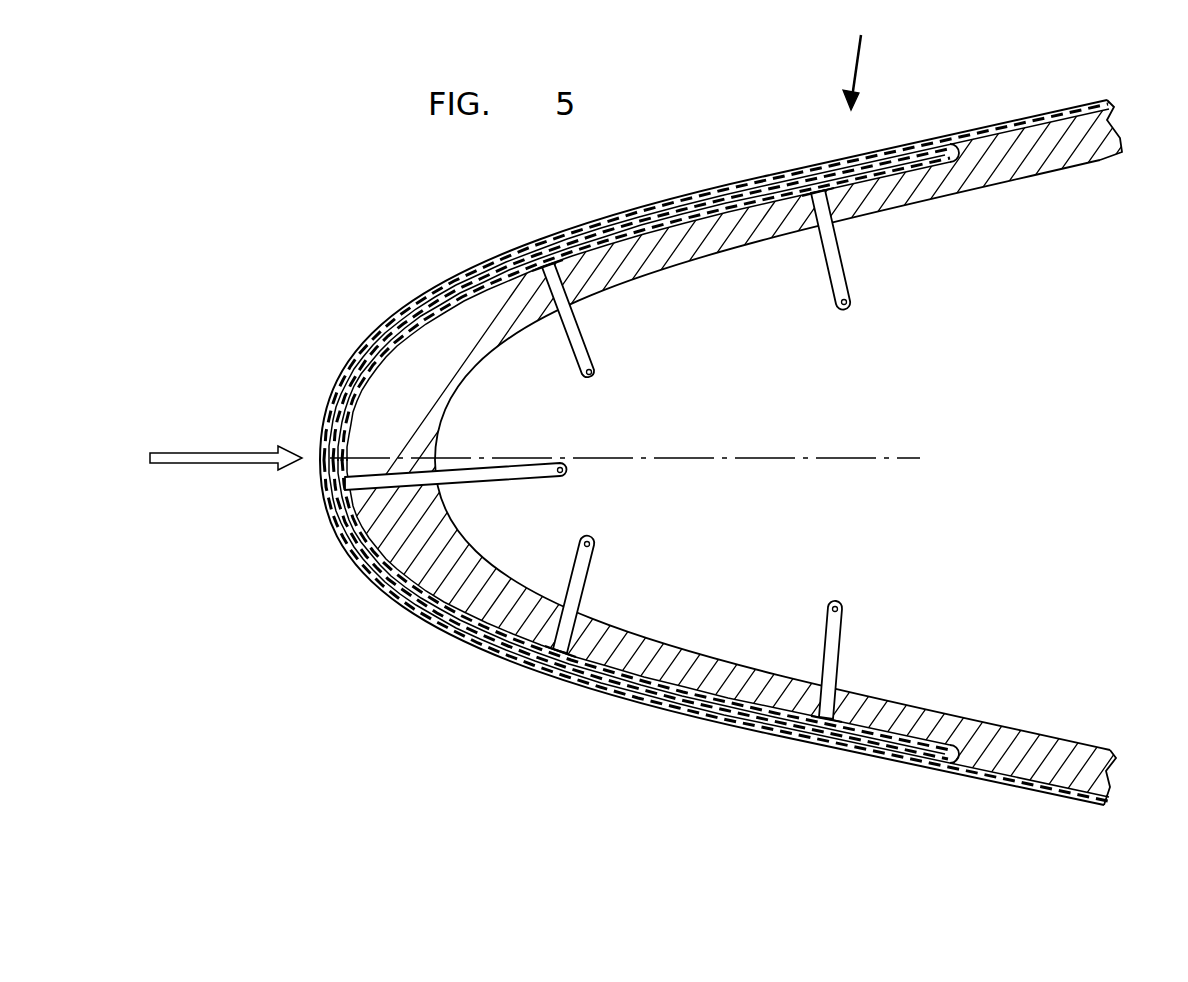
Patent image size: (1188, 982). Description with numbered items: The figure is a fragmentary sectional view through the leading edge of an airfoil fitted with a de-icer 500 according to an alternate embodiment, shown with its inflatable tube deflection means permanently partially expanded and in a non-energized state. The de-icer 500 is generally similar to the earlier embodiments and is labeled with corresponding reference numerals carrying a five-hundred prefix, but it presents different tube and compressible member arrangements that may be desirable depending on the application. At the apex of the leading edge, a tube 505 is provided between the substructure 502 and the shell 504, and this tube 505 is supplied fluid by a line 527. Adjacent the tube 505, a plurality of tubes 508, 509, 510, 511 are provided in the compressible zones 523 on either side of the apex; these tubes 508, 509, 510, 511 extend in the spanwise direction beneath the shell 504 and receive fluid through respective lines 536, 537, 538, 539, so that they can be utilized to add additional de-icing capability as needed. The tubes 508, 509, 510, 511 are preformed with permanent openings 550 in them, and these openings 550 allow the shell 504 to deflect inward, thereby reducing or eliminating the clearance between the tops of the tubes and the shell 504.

The de-icer 500 is at (873, 55).
The substructure 502 is at (1068, 746).
The shell 504 is at (1093, 807).
The tube 505 is at (322, 400).
The tube 508 is at (842, 748).
The tube 509 is at (623, 700).
The tube 510 is at (478, 275).
The tube 511 is at (822, 163).
The compressible zone 523 is at (961, 140).
The line 527 is at (533, 468).
The line 536 is at (835, 630).
The line 537 is at (585, 558).
The line 538 is at (578, 347).
The line 539 is at (836, 271).
The permanent opening 550 is at (901, 143).